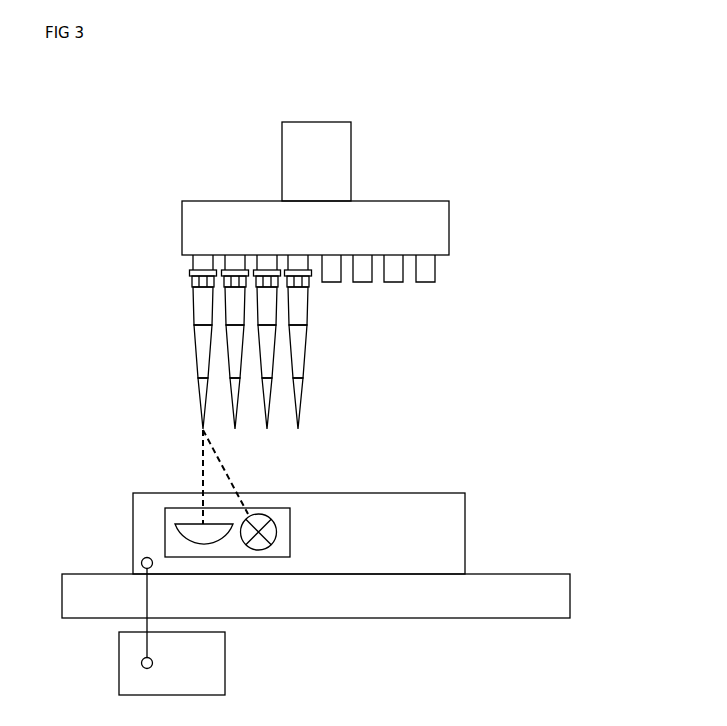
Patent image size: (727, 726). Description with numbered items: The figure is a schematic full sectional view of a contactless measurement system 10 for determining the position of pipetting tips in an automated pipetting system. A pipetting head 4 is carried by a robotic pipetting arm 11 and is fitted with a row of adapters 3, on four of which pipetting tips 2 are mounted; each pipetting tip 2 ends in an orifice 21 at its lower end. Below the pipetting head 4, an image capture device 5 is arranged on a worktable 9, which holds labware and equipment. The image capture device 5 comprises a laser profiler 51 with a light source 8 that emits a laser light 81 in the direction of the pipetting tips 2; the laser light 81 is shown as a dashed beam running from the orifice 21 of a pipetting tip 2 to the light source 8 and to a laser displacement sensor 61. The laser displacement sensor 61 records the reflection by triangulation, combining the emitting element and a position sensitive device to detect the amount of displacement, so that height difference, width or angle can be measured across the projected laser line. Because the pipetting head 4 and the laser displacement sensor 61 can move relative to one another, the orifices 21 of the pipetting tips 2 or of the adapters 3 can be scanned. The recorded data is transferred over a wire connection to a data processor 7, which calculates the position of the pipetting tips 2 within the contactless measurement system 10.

The contactless measurement system 10 is at (124, 178).
The robotic pipetting arm 11 is at (325, 155).
The pipetting head 4 is at (427, 227).
The adapters 3 is at (427, 270).
The pipetting tips 2 is at (348, 354).
The orifices 21 is at (300, 432).
The laser light 81 is at (202, 463).
The image capture device 5 is at (443, 520).
The laser displacement sensor 61 is at (177, 525).
The laser profiler 51 is at (283, 517).
The light source 8 is at (258, 550).
The worktable 9 is at (498, 607).
The data processor 7 is at (200, 648).